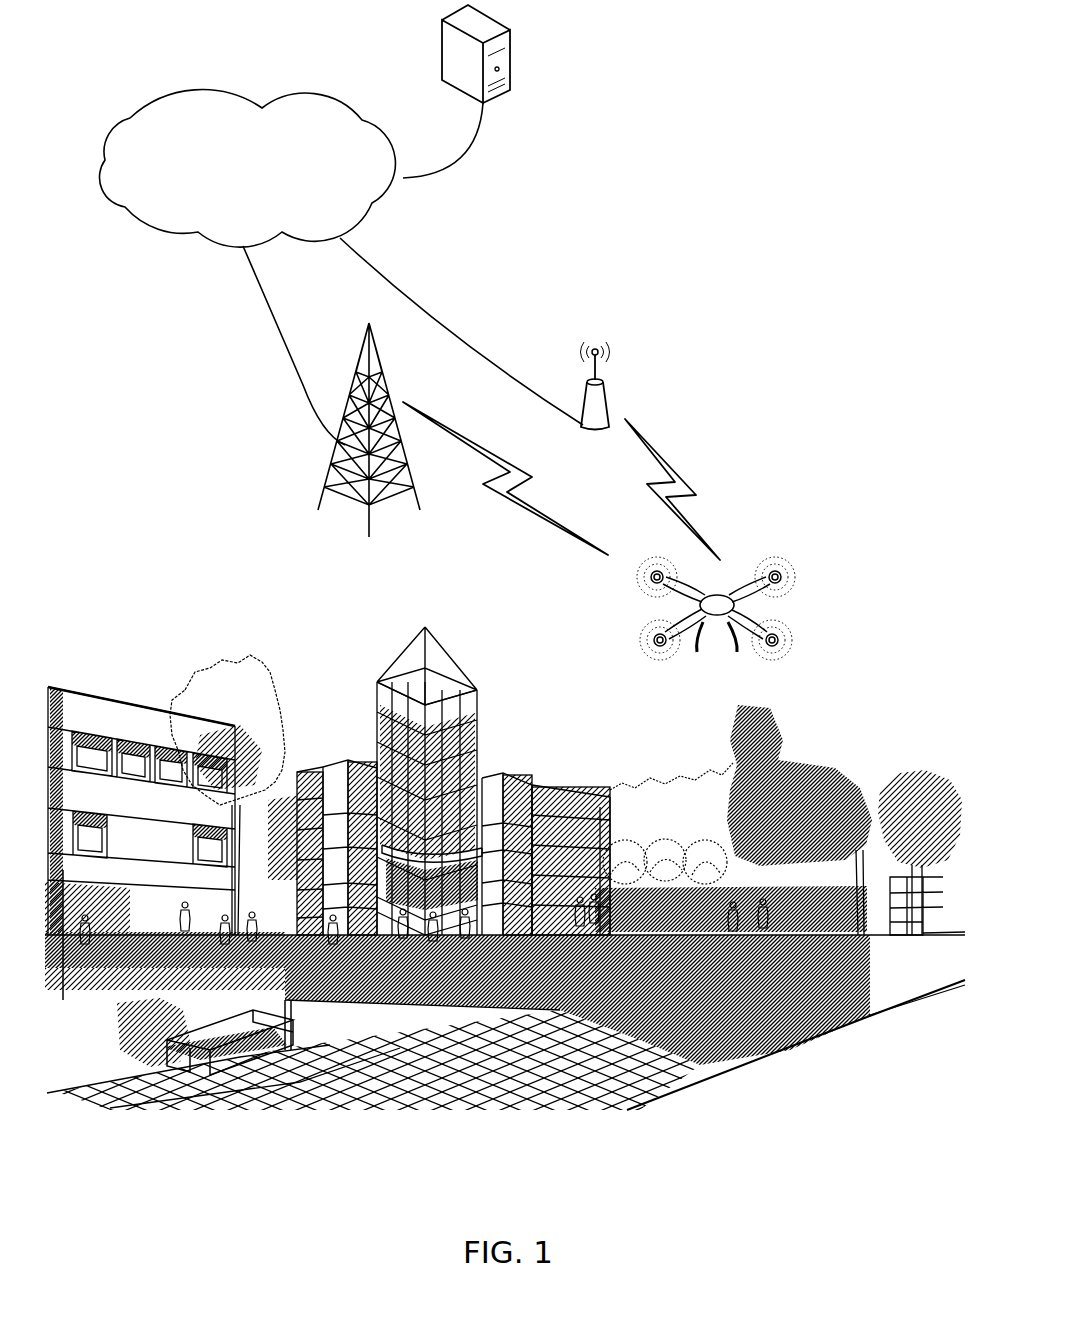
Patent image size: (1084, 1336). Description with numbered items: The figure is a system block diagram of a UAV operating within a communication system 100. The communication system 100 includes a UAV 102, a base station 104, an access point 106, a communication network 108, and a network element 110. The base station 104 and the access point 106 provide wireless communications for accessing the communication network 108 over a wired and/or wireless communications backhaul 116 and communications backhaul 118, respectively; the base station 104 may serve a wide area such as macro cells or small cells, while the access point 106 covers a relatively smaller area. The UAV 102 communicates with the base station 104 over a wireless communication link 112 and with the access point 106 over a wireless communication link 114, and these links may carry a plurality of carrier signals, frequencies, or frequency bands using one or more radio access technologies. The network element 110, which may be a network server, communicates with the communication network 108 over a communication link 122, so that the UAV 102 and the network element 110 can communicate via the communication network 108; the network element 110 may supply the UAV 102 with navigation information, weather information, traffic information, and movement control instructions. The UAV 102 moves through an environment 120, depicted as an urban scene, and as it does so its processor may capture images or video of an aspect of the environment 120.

The communication system 100 is at (754, 129).
The UAV 102 is at (750, 617).
The base station 104 is at (335, 474).
The access point 106 is at (607, 385).
The communication network 108 is at (232, 207).
The network element 110 is at (437, 55).
The wireless communication link 112 is at (537, 516).
The wireless communication link 114 is at (683, 475).
The communications backhaul 116 is at (277, 333).
The communications backhaul 118 is at (432, 312).
The environment 120 is at (160, 654).
The communication link 122 is at (460, 148).